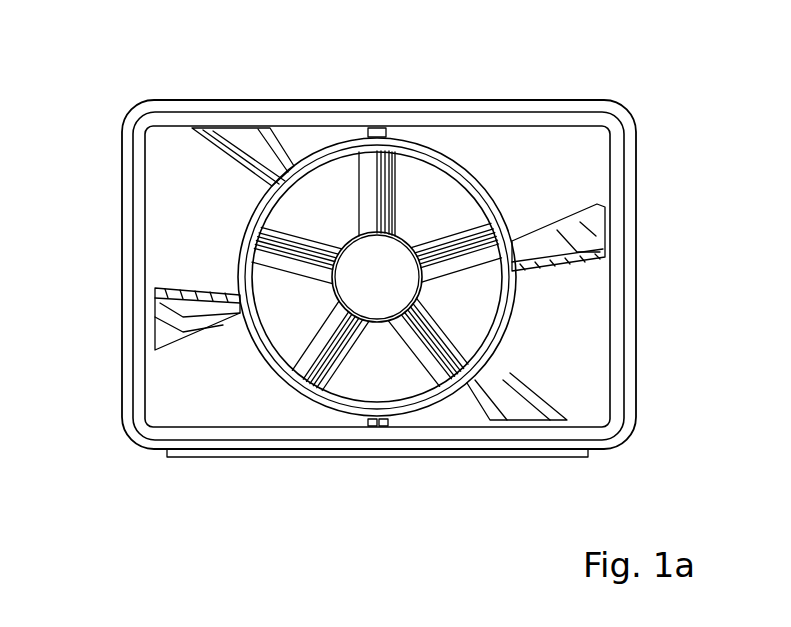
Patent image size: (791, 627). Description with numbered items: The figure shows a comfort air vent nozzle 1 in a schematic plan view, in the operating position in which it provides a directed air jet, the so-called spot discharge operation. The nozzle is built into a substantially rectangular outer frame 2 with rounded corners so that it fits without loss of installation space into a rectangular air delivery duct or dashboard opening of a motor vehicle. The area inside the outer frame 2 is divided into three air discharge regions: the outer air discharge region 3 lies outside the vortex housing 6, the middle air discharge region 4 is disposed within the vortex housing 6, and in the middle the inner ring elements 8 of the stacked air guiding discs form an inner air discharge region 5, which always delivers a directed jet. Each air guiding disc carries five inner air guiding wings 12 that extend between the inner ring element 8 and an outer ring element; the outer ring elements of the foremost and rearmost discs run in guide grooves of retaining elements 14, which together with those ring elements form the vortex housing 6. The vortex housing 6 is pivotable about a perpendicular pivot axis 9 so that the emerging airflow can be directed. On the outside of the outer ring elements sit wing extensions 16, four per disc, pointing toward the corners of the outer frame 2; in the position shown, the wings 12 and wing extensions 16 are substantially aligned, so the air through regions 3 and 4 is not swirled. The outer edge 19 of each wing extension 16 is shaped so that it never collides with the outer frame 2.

The comfort air vent nozzle 1 is at (676, 59).
The outer frame 2 is at (230, 428).
The outer air discharge region 3 is at (180, 395).
The middle air discharge region 4 is at (383, 375).
The inner air discharge region 5 is at (383, 297).
The vortex housing 6 is at (477, 175).
The inner ring element 8 is at (403, 243).
The pivot axis 9 is at (388, 130).
The inner air guiding wing 12 is at (373, 173).
The retaining element 14 is at (335, 408).
The wing extension 16 is at (550, 240).
The outer edge 19 is at (230, 128).